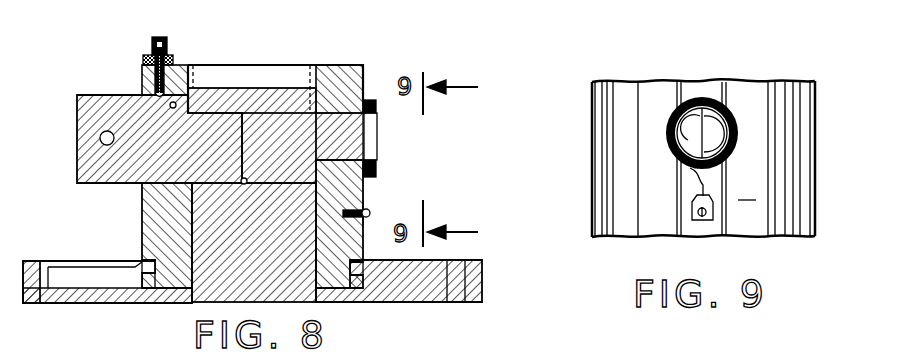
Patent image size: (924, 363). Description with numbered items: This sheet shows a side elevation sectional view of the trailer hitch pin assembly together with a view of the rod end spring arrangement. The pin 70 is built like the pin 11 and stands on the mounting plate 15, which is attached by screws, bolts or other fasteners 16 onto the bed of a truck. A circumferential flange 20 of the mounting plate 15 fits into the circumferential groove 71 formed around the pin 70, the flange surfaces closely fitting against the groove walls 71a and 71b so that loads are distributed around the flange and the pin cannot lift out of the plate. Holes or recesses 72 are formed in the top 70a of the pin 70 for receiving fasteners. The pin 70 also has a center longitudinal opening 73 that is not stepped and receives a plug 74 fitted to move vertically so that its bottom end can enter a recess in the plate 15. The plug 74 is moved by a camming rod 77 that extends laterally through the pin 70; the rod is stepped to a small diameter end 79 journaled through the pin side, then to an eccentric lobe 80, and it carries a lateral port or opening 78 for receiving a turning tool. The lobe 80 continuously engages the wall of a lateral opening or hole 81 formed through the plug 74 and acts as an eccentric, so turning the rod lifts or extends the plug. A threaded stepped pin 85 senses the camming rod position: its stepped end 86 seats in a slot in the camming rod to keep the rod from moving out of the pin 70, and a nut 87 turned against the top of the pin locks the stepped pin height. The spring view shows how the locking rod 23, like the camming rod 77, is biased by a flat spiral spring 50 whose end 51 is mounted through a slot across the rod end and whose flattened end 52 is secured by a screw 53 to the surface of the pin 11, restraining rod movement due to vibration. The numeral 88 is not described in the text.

In FIG. 9, the pin 11 is at (703, 158).
In FIG. 8, the mounting plate 15 is at (412, 303).
In FIG. 8, the fasteners 16 is at (472, 262).
In FIG. 8, the circumferential flange 20 is at (142, 280).
In FIG. 9, the locking rod 23 is at (680, 83).
In FIG. 8, the flat spiral spring 50 is at (380, 140).
In FIG. 9, the flat spiral spring 50 is at (744, 138).
In FIG. 9, the flat spiral spring end 51 is at (723, 82).
In FIG. 8, the flattened end 52 is at (368, 210).
In FIG. 9, the flattened end 52 is at (712, 199).
In FIG. 8, the screw 53 is at (368, 213).
In FIG. 9, the screw 53 is at (700, 213).
In FIG. 8, the pin 70 is at (142, 202).
In FIG. 8, the top 70a is at (352, 65).
In FIG. 8, the circumferential groove 71 is at (143, 270).
In FIG. 8, the groove wall 71a is at (146, 262).
In FIG. 8, the groove wall 71b is at (147, 275).
In FIG. 8, the holes or recesses 72 is at (197, 66).
In FIG. 8, the center longitudinal opening 73 is at (385, 184).
In FIG. 8, the plug 74 is at (188, 190).
In FIG. 8, the camming rod 77 is at (78, 142).
In FIG. 8, the lateral port or opening 78 is at (101, 137).
In FIG. 8, the small diameter end 79 is at (363, 80).
In FIG. 8, the eccentric lobe 80 is at (270, 123).
In FIG. 8, the lateral opening or hole 81 is at (244, 181).
In FIG. 8, the threaded stepped pin 85 is at (152, 42).
In FIG. 8, the stepped end 86 is at (143, 82).
In FIG. 8, the nut 87 is at (172, 60).
In FIG. 8, the bore 88 is at (133, 108).